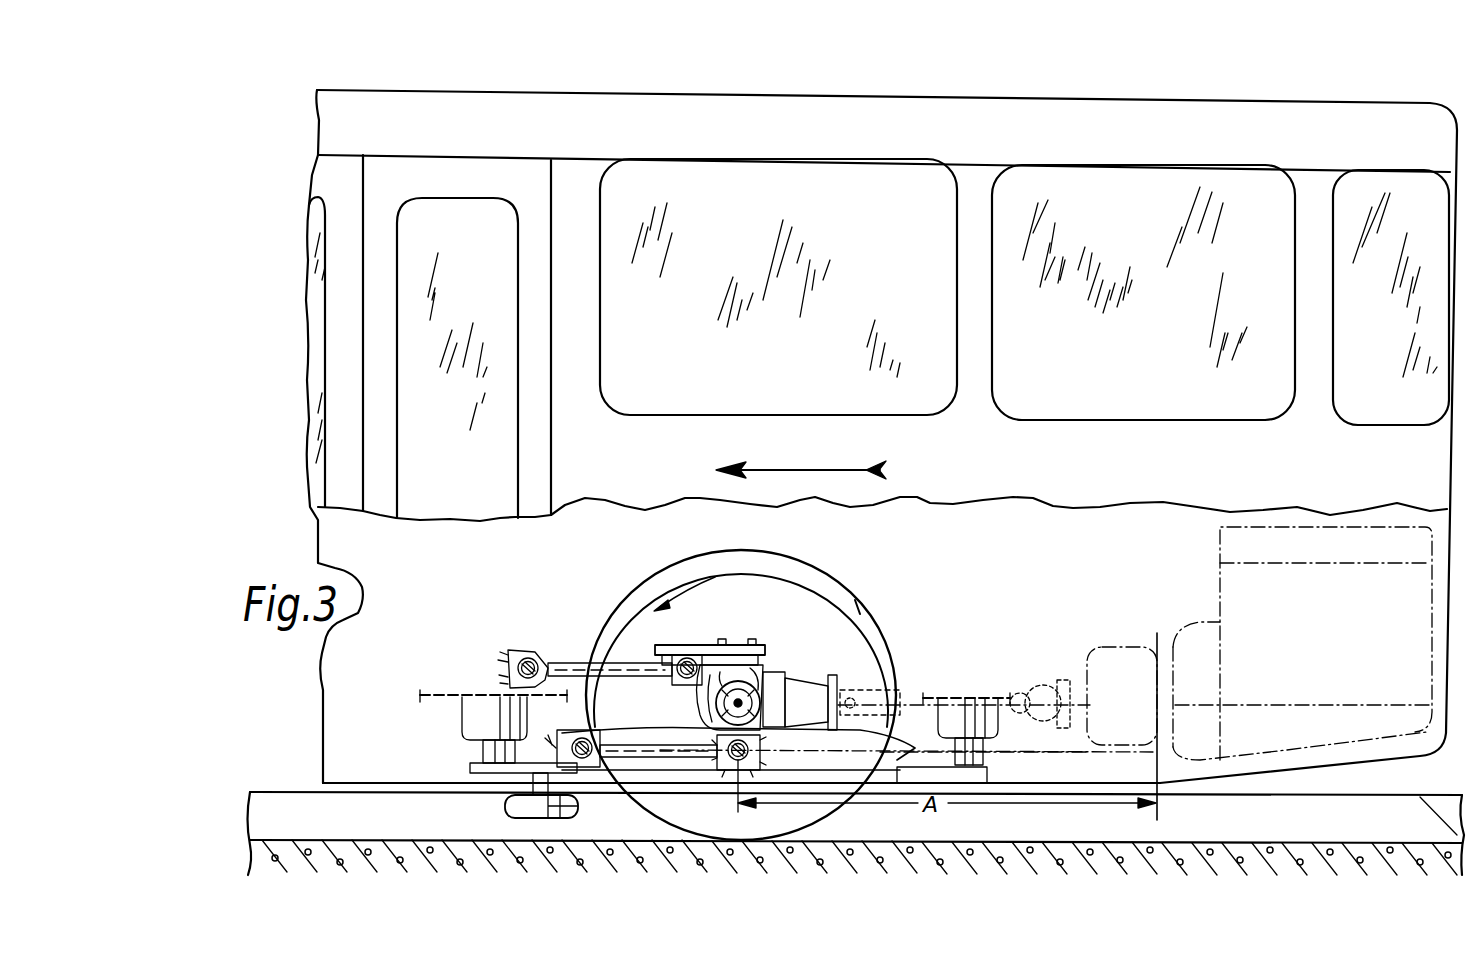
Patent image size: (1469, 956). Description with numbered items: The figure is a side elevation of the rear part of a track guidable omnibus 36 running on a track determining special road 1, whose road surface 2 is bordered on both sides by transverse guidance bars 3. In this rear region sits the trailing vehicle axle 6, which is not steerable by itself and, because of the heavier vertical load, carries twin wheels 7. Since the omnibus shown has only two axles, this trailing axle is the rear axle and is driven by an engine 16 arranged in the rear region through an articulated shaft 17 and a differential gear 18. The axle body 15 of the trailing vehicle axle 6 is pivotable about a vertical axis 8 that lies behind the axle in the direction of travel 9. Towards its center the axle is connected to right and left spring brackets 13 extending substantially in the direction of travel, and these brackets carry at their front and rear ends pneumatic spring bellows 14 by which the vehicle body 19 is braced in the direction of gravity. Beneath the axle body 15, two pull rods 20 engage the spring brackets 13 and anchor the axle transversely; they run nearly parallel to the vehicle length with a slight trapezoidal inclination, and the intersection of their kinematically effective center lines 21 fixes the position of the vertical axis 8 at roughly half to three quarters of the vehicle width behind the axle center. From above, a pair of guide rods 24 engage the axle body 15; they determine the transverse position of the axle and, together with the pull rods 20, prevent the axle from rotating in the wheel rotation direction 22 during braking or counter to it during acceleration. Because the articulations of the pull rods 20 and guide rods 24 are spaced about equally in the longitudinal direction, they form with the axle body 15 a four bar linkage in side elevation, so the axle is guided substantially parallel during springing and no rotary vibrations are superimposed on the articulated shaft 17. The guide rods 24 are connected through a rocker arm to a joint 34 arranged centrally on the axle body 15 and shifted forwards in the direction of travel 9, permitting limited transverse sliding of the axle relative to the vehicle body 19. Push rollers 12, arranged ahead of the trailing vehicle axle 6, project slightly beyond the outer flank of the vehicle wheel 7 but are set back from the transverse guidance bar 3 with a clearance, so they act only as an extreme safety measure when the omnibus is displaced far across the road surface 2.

The track determining special road 1 is at (283, 782).
The road surface 2 is at (356, 832).
The transverse guidance bar 3 is at (398, 810).
The trailing vehicle axle 6 is at (862, 606).
The twin wheels 7 is at (773, 590).
The vertical axis 8 is at (1155, 662).
The direction of travel 9 is at (800, 470).
The push roller 12 is at (578, 808).
The spring bracket 13 is at (800, 735).
The pneumatic spring bellows 14 is at (470, 718).
The axle body 15 is at (765, 670).
The engine 16 is at (1228, 590).
The articulated shaft 17 is at (916, 698).
The differential gear 18 is at (736, 668).
The vehicle body 19 is at (433, 690).
The pull rod 20 is at (690, 757).
The kinematically effective center line 21 is at (1038, 752).
The wheel rotation direction 22 is at (685, 583).
The guide rod 24 is at (567, 665).
The joint 34 is at (668, 678).
The omnibus 36 is at (303, 172).